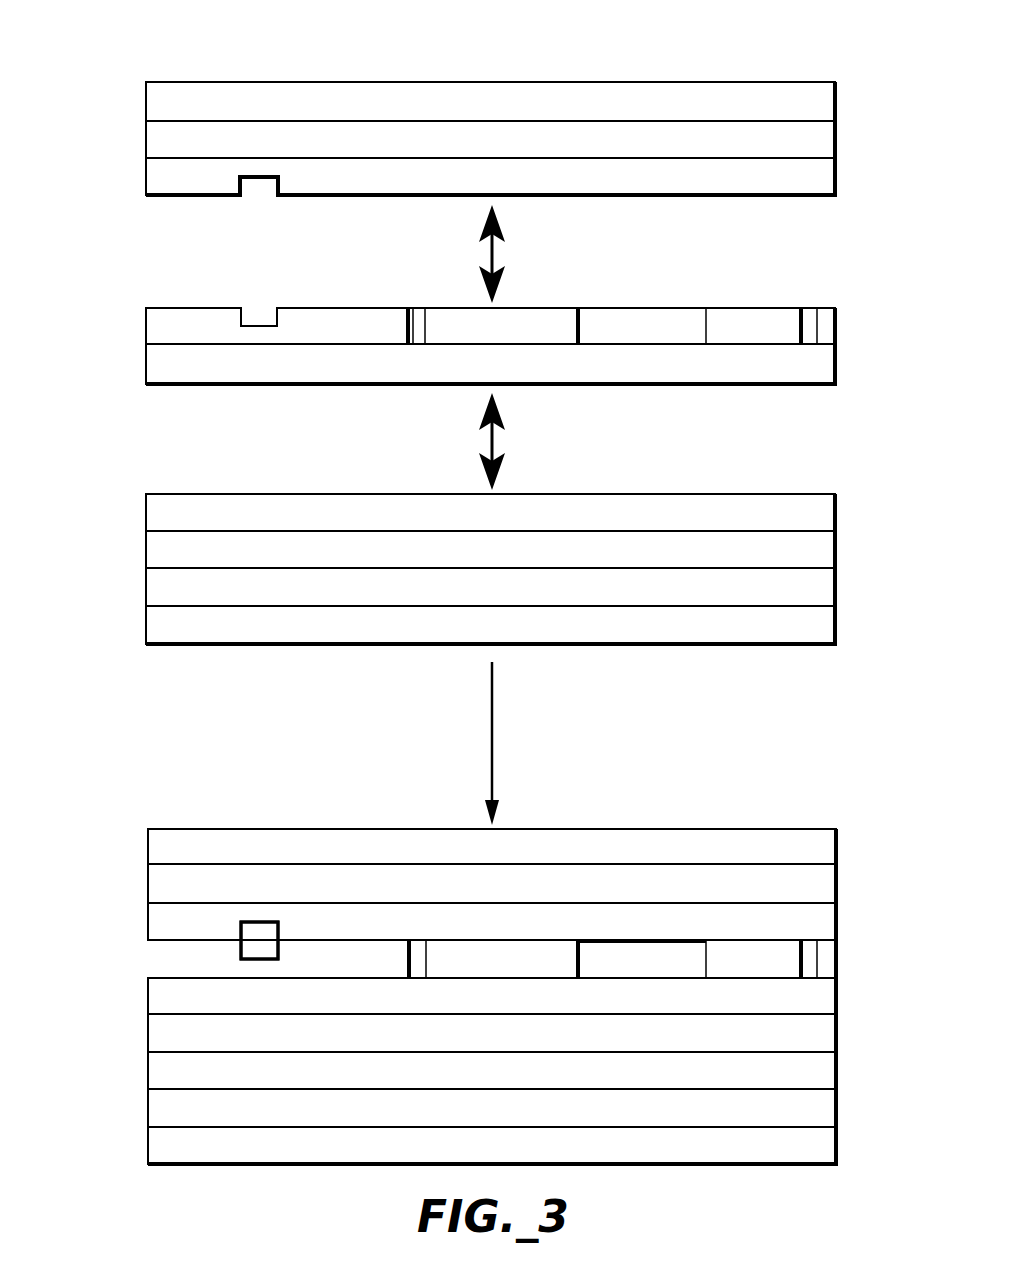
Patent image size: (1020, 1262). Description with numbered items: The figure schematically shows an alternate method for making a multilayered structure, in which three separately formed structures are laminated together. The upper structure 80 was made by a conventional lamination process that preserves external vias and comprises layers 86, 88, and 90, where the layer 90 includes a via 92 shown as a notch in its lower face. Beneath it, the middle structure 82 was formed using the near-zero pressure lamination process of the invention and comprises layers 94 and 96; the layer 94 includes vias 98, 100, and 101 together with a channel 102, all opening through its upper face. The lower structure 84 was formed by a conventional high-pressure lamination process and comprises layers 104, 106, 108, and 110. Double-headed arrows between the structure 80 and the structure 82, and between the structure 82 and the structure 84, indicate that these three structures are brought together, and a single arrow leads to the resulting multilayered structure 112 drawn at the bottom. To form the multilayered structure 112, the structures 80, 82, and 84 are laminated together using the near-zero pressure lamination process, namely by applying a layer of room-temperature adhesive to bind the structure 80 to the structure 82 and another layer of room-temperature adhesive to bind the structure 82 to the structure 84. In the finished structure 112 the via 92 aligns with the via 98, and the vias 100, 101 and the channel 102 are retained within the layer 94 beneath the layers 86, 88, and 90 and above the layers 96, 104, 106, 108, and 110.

The structure 80 is at (118, 68).
The structure 82 is at (118, 300).
The structure 84 is at (118, 492).
The layer 86 is at (830, 93).
The layer 88 is at (830, 133).
The layer 90 is at (830, 178).
The via 92 is at (258, 178).
The layer 94 is at (828, 326).
The layer 96 is at (828, 370).
The via 98 is at (258, 325).
The via 100 is at (417, 320).
The via 101 is at (808, 322).
The channel 102 is at (729, 322).
The layer 104 is at (830, 510).
The layer 106 is at (830, 550).
The layer 108 is at (830, 585).
The layer 110 is at (830, 628).
The multilayered structure 112 is at (118, 820).